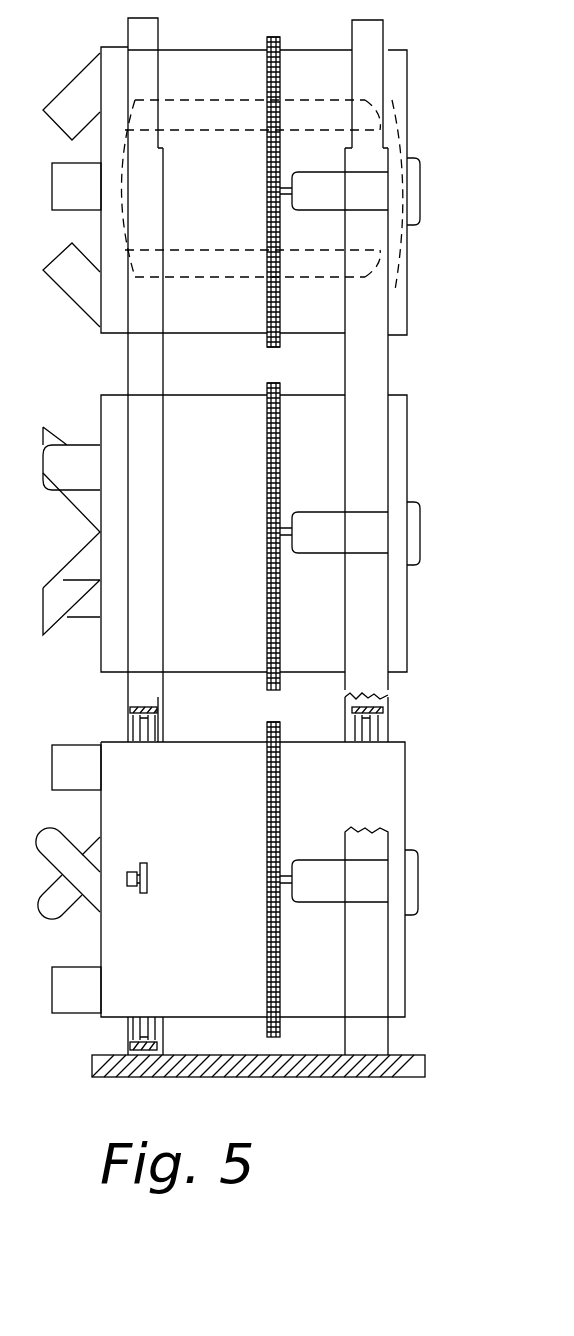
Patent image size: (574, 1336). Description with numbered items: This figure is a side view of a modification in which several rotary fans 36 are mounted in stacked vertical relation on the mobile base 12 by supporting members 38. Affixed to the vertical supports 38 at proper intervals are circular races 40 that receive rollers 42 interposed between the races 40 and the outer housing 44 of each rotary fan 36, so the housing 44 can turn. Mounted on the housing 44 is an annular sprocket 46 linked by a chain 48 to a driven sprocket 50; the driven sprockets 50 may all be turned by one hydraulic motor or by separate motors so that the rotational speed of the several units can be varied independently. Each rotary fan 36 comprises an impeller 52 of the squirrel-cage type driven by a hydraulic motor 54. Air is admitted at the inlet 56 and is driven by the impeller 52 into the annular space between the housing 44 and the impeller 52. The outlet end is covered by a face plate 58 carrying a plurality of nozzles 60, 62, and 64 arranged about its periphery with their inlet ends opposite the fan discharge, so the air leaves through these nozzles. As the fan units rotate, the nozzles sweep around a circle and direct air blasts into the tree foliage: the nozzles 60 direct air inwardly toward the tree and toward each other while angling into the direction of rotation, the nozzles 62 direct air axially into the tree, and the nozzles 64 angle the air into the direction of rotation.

The mobile base 12 is at (310, 1078).
The rotary fan 36 is at (249, 522).
The supporting members 38 is at (138, 368).
The circular races 40 is at (160, 33).
The rollers 42 is at (128, 719).
The outer housing 44 is at (316, 48).
The annular sprocket 46 is at (266, 526).
The chain 48 is at (266, 155).
The driven sprocket 50 is at (286, 190).
The impeller 52 is at (221, 258).
The hydraulic motor 54 is at (420, 217).
The air inlet 56 is at (419, 142).
The face plate 58 is at (108, 46).
The nozzles 60 is at (62, 97).
The nozzles 62 is at (58, 178).
The nozzles 64 is at (80, 498).